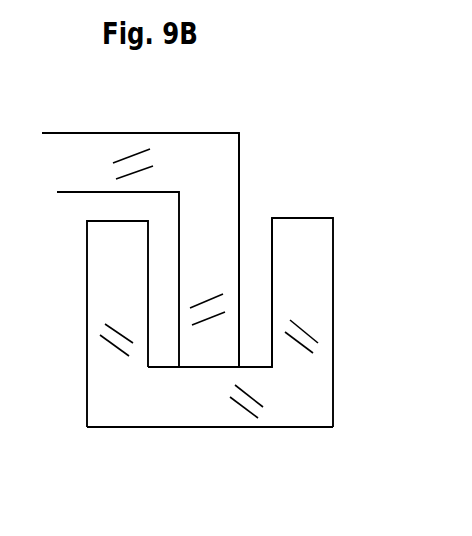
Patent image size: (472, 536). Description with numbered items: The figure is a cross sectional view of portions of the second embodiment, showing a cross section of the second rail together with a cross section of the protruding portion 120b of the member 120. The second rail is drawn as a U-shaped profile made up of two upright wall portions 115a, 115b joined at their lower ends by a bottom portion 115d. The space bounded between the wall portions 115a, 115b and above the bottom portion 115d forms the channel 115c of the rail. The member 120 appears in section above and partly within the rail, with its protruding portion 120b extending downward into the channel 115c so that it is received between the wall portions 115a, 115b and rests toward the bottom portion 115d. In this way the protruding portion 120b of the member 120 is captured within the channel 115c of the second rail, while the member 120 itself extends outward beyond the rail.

The member 120 is at (153, 132).
The protruding portion 120b is at (226, 202).
The wall portion 115a is at (319, 295).
The wall portion 115b is at (106, 302).
The channel 115c is at (241, 233).
The bottom portion 115d is at (202, 413).